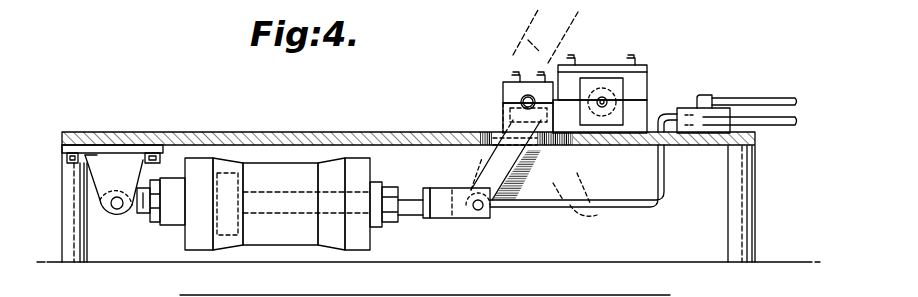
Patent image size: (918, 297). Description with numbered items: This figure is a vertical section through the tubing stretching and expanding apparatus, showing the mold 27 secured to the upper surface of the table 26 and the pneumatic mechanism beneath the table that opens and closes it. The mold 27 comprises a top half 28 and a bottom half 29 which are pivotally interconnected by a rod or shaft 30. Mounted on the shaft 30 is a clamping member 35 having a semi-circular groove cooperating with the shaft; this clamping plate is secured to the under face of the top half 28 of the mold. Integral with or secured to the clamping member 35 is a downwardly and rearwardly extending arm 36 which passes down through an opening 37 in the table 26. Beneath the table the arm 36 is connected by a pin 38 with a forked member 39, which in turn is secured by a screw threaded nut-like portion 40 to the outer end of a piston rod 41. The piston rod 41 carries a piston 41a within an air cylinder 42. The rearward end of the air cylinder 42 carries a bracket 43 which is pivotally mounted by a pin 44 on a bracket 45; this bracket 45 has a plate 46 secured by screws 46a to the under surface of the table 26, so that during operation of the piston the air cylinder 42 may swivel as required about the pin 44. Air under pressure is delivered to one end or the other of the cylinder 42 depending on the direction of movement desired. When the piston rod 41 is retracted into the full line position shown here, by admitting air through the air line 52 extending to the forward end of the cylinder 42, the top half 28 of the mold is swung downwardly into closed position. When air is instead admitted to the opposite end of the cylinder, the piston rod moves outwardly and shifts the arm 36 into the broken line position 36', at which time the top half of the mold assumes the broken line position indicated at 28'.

The table 26 is at (378, 140).
The mold 27 is at (616, 103).
The top half of the mold 28 is at (619, 90).
The broken line position of the top half of the mold 28' is at (577, 36).
The bottom half of the mold 29 is at (635, 122).
The rod or shaft 30 is at (524, 99).
The clamping member 35 is at (510, 110).
The arm 36 is at (507, 160).
The broken line position of the arm 36' is at (597, 205).
The opening in the table 37 is at (492, 138).
The pin 38 is at (480, 210).
The forked member 39 is at (462, 209).
The screw threaded nut-like portion 40 is at (425, 190).
The piston rod 41 is at (410, 205).
The piston 41a is at (226, 172).
The air cylinder 42 is at (287, 170).
The bracket 43 is at (137, 210).
The pin 44 is at (117, 209).
The bracket 45 is at (107, 175).
The plate 46 is at (118, 152).
The screws 46a is at (67, 160).
The air line 52 is at (662, 208).